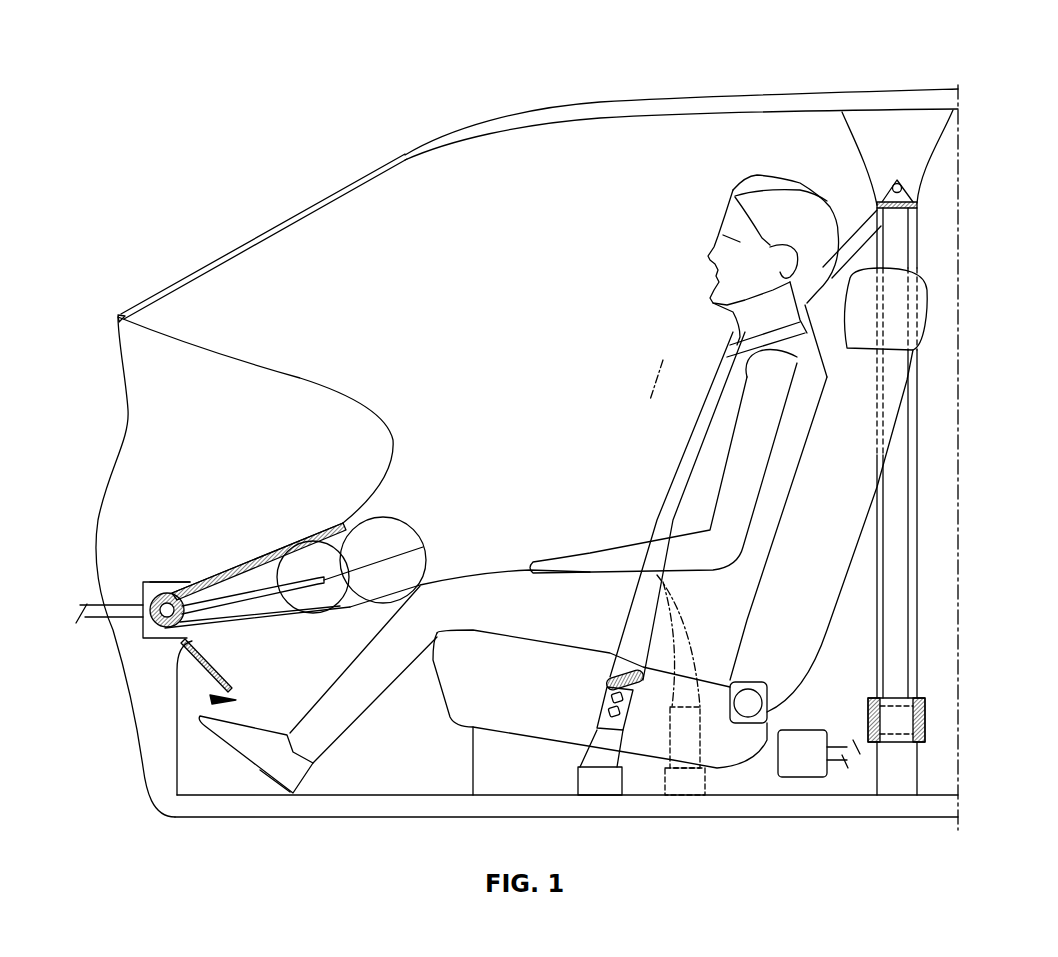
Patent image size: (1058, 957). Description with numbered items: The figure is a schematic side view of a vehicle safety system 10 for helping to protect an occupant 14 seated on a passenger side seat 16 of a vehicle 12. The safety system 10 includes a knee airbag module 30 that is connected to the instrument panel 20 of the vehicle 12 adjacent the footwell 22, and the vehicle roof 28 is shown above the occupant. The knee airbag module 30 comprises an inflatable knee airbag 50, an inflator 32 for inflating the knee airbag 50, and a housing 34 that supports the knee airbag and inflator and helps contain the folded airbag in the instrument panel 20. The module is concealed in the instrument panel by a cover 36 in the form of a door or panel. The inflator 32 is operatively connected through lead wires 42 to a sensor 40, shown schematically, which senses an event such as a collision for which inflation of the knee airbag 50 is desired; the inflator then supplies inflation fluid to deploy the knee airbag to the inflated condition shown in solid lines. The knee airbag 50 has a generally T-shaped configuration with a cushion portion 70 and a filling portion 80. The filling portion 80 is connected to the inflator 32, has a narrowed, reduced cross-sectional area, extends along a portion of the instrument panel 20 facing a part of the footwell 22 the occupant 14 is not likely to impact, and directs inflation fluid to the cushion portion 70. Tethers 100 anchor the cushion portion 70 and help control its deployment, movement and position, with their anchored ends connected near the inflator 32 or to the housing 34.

The vehicle safety system 10 is at (430, 430).
The vehicle 12 is at (257, 210).
The occupant 14 is at (720, 417).
The passenger side seat 16 is at (560, 700).
The instrument panel 20 is at (247, 397).
The footwell 22 is at (210, 698).
The roof 28 is at (733, 105).
The knee airbag module 30 is at (200, 546).
The inflator 32 is at (143, 640).
The housing 34 is at (157, 582).
The cover 36 is at (208, 662).
The sensor 40 is at (800, 750).
The lead wires 42 is at (100, 603).
The knee airbag 50 is at (393, 540).
The cushion portion 70 is at (342, 540).
The filling portion 80 is at (240, 575).
The tethers 100 is at (268, 585).